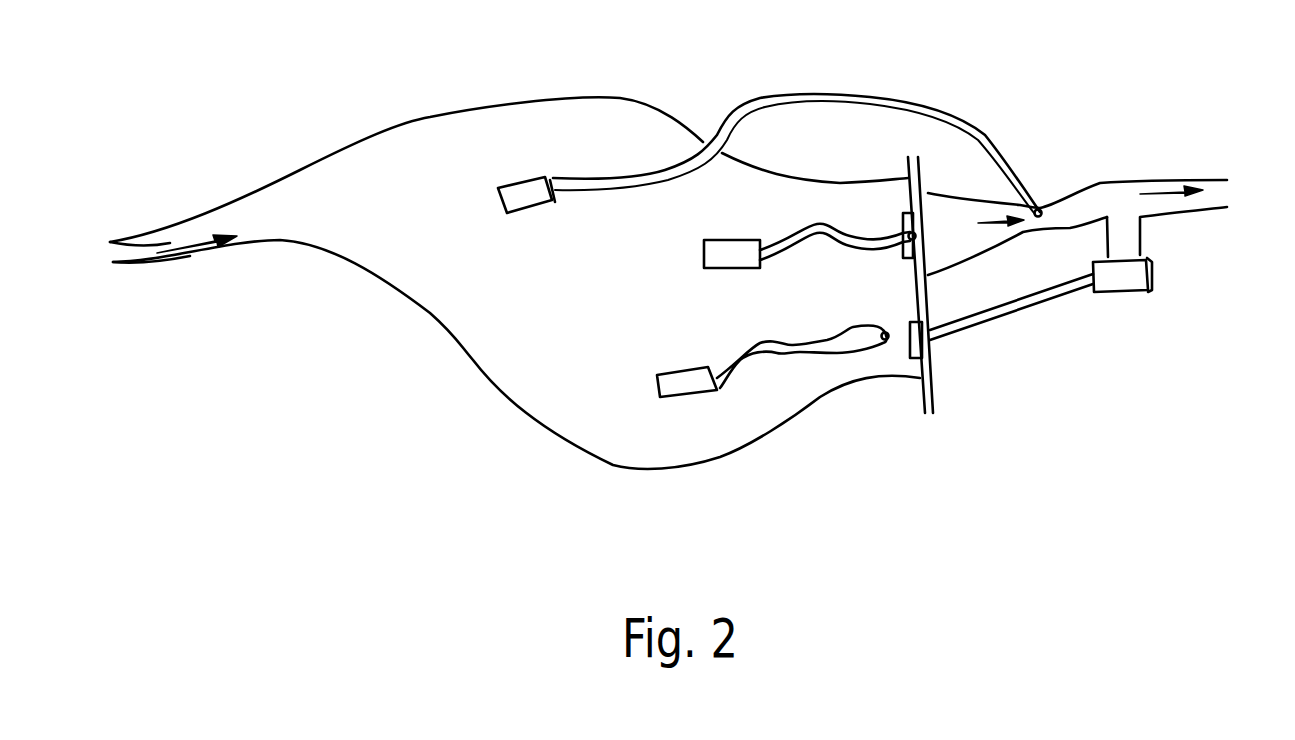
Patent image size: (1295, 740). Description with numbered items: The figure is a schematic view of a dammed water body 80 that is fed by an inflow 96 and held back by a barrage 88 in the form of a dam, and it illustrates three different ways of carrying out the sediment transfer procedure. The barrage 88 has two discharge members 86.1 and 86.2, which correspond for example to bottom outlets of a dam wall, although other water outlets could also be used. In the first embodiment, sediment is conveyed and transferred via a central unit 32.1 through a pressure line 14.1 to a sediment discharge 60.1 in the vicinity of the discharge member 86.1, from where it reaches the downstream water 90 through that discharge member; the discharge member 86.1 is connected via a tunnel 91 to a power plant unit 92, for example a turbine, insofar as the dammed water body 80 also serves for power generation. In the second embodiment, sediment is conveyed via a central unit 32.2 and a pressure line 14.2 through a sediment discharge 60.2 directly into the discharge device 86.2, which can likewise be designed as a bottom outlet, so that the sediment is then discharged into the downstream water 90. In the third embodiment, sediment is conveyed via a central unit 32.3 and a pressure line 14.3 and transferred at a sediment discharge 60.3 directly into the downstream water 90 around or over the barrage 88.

The pressure line 14.1 is at (777, 350).
The pressure line 14.2 is at (832, 230).
The pressure line 14.3 is at (722, 125).
The central unit 32.1 is at (682, 387).
The central unit 32.2 is at (720, 257).
The central unit 32.3 is at (510, 197).
The sediment discharge 60.1 is at (885, 345).
The sediment discharge 60.2 is at (920, 232).
The sediment discharge 60.3 is at (1042, 205).
The dammed water body 80 is at (515, 283).
The discharge member 86.1 is at (912, 345).
The discharge member 86.2 is at (907, 232).
The barrage 88 is at (930, 370).
The downstream water 90 is at (1133, 193).
The tunnel 91 is at (1003, 308).
The power plant unit 92 is at (1128, 273).
The inflow 96 is at (150, 257).